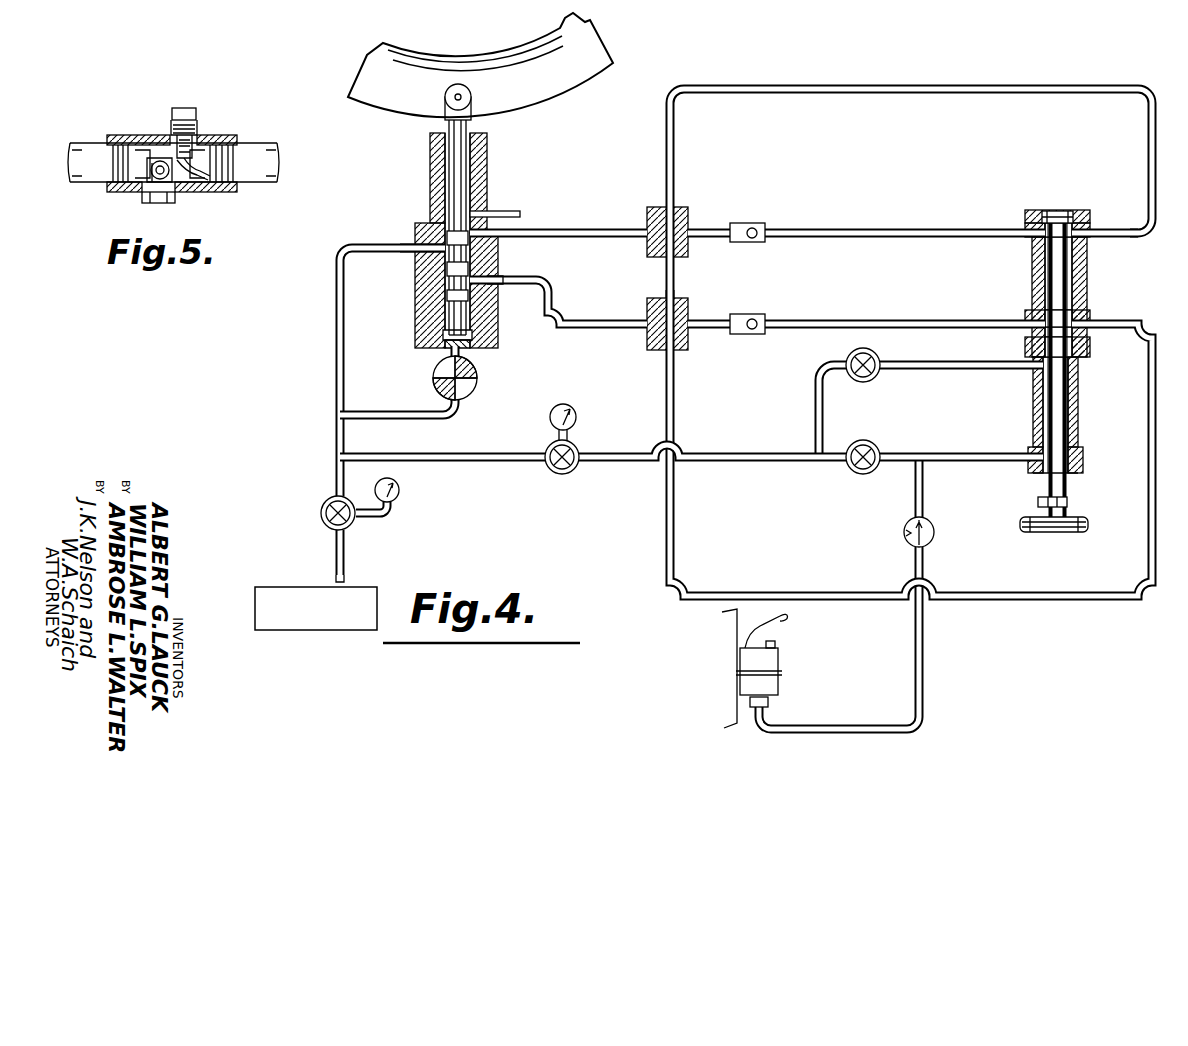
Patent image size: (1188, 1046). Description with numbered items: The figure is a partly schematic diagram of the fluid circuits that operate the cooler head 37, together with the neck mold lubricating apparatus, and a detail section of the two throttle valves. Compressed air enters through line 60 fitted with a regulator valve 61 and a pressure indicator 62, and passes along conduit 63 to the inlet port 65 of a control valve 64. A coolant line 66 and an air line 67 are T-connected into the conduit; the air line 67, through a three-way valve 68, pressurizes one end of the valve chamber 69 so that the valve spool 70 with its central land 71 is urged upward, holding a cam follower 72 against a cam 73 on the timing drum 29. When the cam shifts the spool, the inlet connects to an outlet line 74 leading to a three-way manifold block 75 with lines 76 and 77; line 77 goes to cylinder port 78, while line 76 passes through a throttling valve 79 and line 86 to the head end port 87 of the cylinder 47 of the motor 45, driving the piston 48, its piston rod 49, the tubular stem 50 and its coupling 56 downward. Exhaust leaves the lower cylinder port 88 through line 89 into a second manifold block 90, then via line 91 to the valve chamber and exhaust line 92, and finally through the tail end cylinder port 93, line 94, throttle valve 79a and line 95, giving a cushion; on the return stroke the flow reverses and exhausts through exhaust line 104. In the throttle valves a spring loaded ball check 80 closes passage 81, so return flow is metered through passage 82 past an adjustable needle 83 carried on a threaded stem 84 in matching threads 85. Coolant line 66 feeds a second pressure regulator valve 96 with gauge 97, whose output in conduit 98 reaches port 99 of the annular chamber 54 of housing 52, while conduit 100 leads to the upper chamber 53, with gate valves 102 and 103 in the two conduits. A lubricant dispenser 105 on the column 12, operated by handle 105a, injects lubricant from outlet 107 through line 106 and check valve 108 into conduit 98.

In FIG. 4, the column 12 is at (701, 658).
In FIG. 4, the timing drum 29 is at (598, 63).
In FIG. 4, the cooler head 37 is at (1031, 535).
In FIG. 4, the cylinder-piston motor 45 is at (1088, 281).
In FIG. 4, the cylinder 47 is at (1069, 301).
In FIG. 4, the piston 48 is at (1080, 210).
In FIG. 4, the piston rod 49 is at (1071, 252).
In FIG. 4, the tubular stem 50 is at (1069, 492).
In FIG. 4, the hollow housing 52 is at (1080, 407).
In FIG. 4, the fluid-tight chamber 53 is at (1066, 381).
In FIG. 4, the annular chamber 54 is at (1075, 457).
In FIG. 4, the female threaded coupling 56 is at (1069, 504).
In FIG. 4, the line 60 is at (336, 546).
In FIG. 4, the regulator valve 61 is at (322, 506).
In FIG. 4, the pressure indicator 62 is at (400, 491).
In FIG. 4, the conduit 63 is at (336, 393).
In FIG. 4, the control valve 64 is at (419, 289).
In FIG. 4, the inlet port 65 is at (420, 243).
In FIG. 4, the coolant line 66 is at (422, 456).
In FIG. 4, the air line 67 is at (451, 352).
In FIG. 4, the 3-way valve 68 is at (478, 376).
In FIG. 4, the valve chamber 69 is at (449, 281).
In FIG. 4, the valve spool 70 is at (451, 319).
In FIG. 4, the central land 71 is at (500, 251).
In FIG. 4, the cam follower 72 is at (476, 99).
In FIG. 4, the cam 73 is at (421, 70).
In FIG. 4, the outlet line 74 is at (569, 228).
In FIG. 4, the 3-way manifold block 75 is at (692, 209).
In FIG. 4, the air line 76 is at (710, 230).
In FIG. 4, the air line 77 is at (675, 159).
In FIG. 4, the cylinder port 78 is at (1090, 231).
In FIG. 5, the throttling valve 79 is at (216, 128).
In FIG. 4, the throttling valve 79 is at (757, 222).
In FIG. 4, the throttle valve 79a is at (760, 319).
In FIG. 5, the ball check 80 is at (161, 161).
In FIG. 5, the passage 81 is at (150, 163).
In FIG. 5, the passage 82 is at (185, 163).
In FIG. 5, the adjustable needle 83 is at (193, 166).
In FIG. 5, the threaded stem 84 is at (185, 117).
In FIG. 5, the matching threads 85 is at (197, 133).
In FIG. 4, the line 86 is at (845, 229).
In FIG. 4, the head end port 87 is at (1041, 211).
In FIG. 4, the lower cylinder port 88 is at (1088, 325).
In FIG. 4, the line 89 is at (675, 399).
In FIG. 4, the 3-way manifold block 90 is at (648, 346).
In FIG. 4, the line 91 is at (600, 320).
In FIG. 4, the exhaust line 92 is at (513, 291).
In FIG. 4, the tail end cylinder port 93 is at (1030, 347).
In FIG. 4, the line 94 is at (915, 320).
In FIG. 4, the line 95 is at (705, 319).
In FIG. 4, the second pressure regulator valve 96 is at (578, 449).
In FIG. 4, the pressure regulator gauge 97 is at (578, 419).
In FIG. 4, the conduit 98 is at (732, 456).
In FIG. 4, the port 99 is at (1031, 463).
In FIG. 4, the conduit 100 is at (822, 411).
In FIG. 4, the gate valve 102 is at (878, 446).
In FIG. 4, the gate valve 103 is at (880, 371).
In FIG. 4, the exhaust line 104 is at (513, 210).
In FIG. 4, the lubricant dispenser 105 is at (780, 661).
In FIG. 4, the plunger-operating handle 105a is at (791, 619).
In FIG. 4, the line 106 is at (923, 501).
In FIG. 4, the outlet 107 is at (770, 702).
In FIG. 4, the one-way ball check valve 108 is at (934, 528).